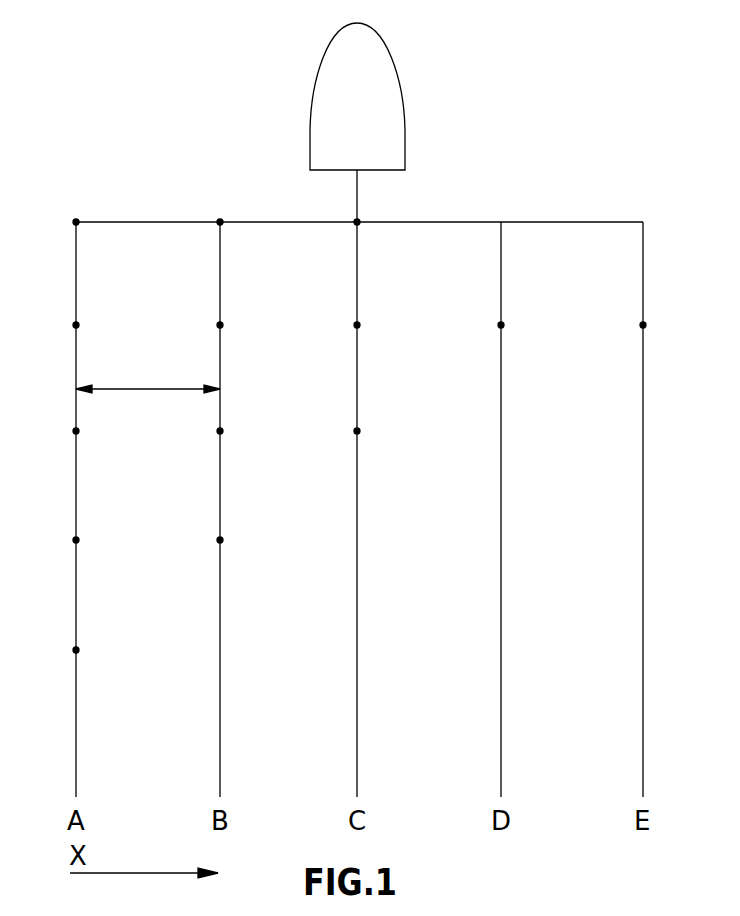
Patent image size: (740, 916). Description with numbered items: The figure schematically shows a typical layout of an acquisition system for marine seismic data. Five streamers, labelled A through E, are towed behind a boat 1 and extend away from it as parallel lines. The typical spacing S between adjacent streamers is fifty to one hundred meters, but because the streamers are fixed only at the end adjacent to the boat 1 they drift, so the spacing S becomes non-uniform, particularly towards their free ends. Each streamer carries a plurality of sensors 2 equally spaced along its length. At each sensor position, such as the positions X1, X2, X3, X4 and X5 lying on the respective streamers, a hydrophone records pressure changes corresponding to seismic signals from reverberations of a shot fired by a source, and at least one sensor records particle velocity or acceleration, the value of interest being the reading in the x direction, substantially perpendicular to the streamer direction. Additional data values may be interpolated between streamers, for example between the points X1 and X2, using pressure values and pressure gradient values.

The boat 1 is at (319, 84).
The sensors 2 is at (219, 219).
The sensor position x1 X1 is at (61, 509).
The sensor position x2 X2 is at (204, 509).
The sensor position x3 X3 is at (340, 509).
The sensor position x4 X4 is at (484, 509).
The sensor position x5 X5 is at (626, 509).
The spacing S is at (148, 374).